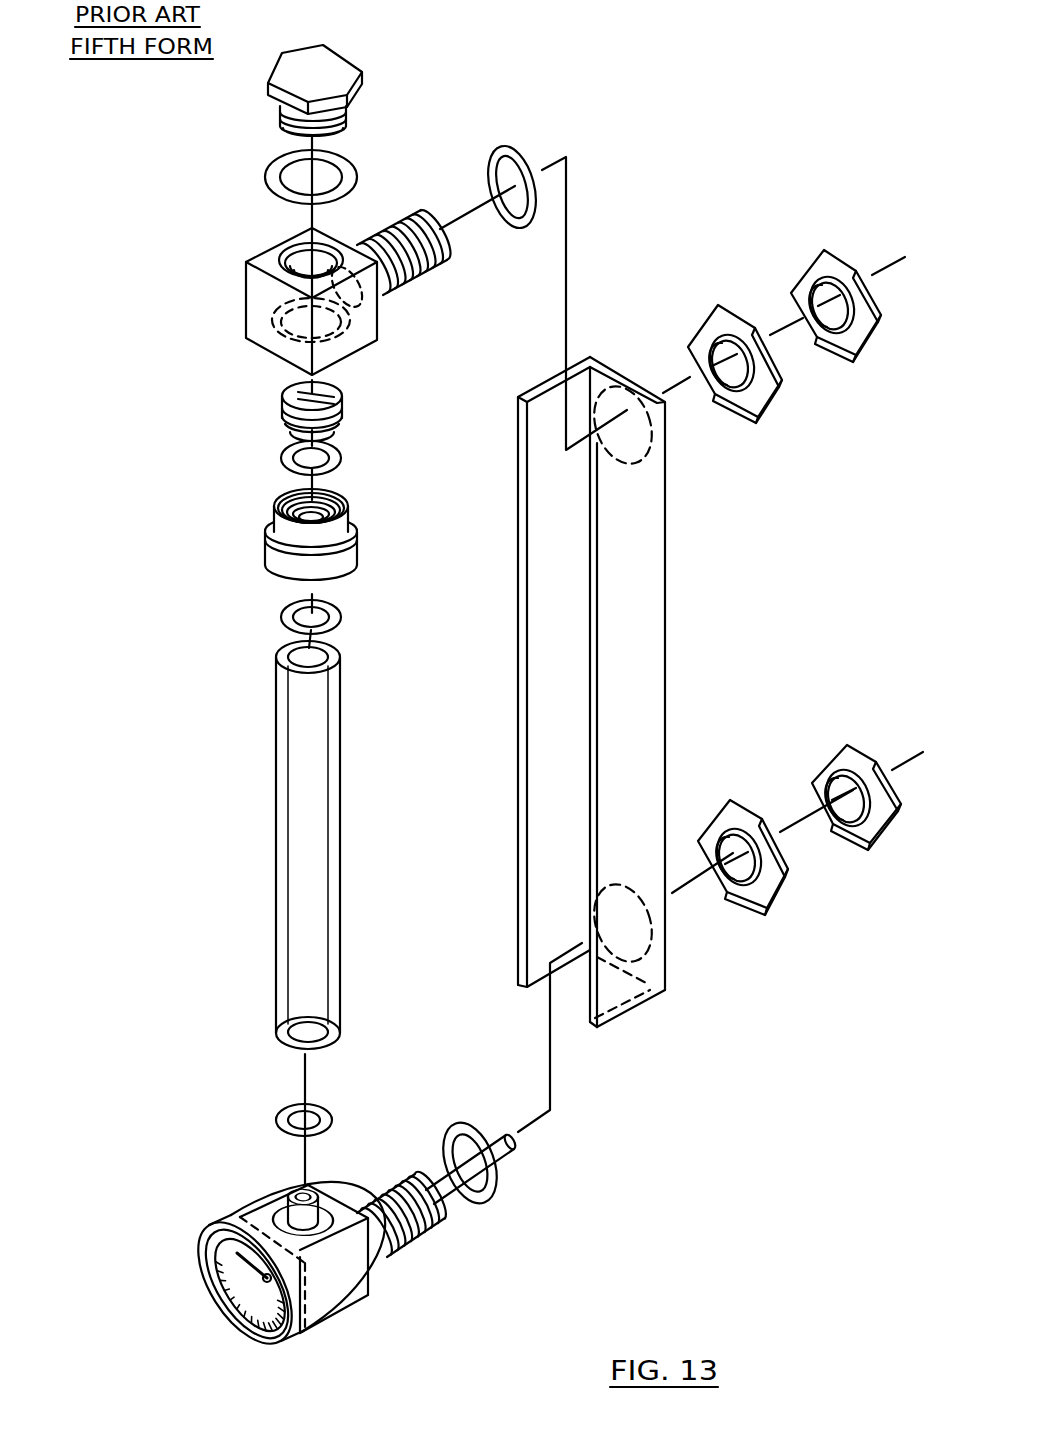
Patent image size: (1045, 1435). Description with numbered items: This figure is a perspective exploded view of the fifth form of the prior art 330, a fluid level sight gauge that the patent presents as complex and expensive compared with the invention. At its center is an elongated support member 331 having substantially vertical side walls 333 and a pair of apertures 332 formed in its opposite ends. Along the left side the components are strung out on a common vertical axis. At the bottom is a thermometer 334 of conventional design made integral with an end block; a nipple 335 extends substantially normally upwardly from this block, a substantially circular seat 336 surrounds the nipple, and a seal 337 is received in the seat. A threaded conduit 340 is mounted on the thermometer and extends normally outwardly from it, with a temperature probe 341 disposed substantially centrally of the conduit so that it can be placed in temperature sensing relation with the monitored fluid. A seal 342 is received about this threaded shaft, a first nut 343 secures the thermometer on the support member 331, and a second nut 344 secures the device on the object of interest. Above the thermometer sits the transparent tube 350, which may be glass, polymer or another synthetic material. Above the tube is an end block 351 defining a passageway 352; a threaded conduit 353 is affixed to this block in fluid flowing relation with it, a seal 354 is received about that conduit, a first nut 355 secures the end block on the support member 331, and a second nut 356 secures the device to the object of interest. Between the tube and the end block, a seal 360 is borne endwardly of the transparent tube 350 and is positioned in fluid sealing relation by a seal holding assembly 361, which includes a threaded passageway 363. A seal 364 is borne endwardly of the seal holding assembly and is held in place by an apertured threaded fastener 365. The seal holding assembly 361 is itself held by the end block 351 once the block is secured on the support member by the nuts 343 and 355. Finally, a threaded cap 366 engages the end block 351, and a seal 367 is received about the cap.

The fifth form of the prior art 330 is at (260, 708).
The support member 331 is at (655, 633).
The apertures 332 is at (600, 385).
The side walls 333 is at (558, 697).
The thermometer 334 is at (345, 1290).
The nipple 335 is at (285, 1212).
The seat 336 is at (325, 1205).
The seal 337 is at (277, 1117).
The threaded conduit 340 is at (408, 1228).
The temperature probe 341 is at (512, 1143).
The seal 342 is at (472, 1127).
The first nut 343 is at (760, 892).
The nut 344 is at (830, 740).
The transparent tube 350 is at (280, 842).
The end block 351 is at (262, 302).
The passageway 352 is at (322, 242).
The threaded conduit 353 is at (407, 280).
The seal 354 is at (505, 148).
The first nut 355 is at (758, 417).
The second nut 356 is at (830, 252).
The seal 360 is at (338, 612).
The seal holding assembly 361 is at (357, 550).
The threaded passageway 363 is at (338, 505).
The seal 364 is at (338, 452).
The threaded fastener 365 is at (345, 400).
The threaded cap 366 is at (333, 58).
The seal 367 is at (340, 158).